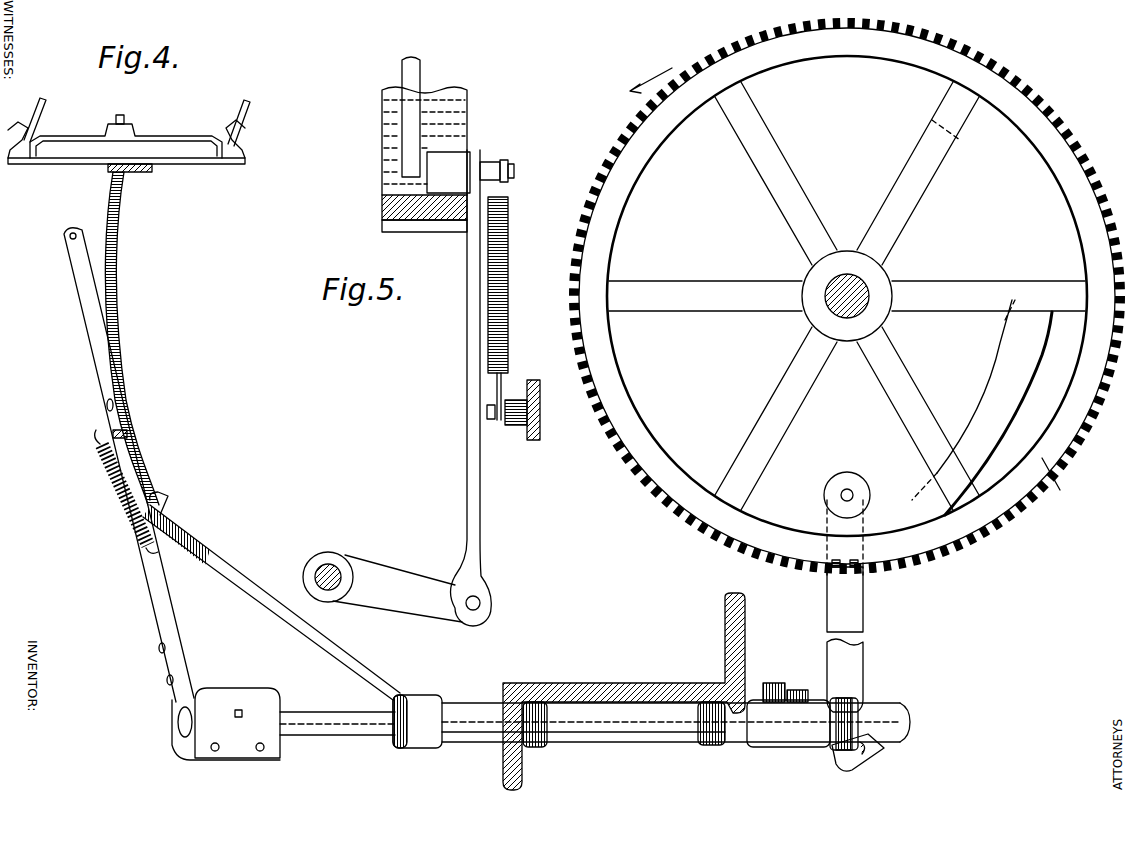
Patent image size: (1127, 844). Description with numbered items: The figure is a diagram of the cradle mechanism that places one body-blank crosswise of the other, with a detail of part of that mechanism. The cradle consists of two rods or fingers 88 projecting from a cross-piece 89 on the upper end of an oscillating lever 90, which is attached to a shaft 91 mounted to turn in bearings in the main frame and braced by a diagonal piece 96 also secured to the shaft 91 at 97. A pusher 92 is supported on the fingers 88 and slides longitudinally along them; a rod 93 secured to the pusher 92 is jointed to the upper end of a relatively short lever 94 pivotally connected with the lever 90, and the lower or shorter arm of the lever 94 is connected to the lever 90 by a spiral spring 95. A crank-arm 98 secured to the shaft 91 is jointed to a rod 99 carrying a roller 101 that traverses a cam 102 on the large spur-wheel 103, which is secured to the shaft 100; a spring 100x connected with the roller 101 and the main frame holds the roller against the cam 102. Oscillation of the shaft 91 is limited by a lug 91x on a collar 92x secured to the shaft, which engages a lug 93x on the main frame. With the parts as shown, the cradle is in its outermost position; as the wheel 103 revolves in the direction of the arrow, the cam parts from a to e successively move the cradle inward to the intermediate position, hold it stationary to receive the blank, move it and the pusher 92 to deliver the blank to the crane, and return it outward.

In FIG. 4, the rods or fingers 88 is at (240, 110).
In FIG. 4, the cross-piece 89 is at (192, 162).
In FIG. 4, the oscillating lever 90 is at (108, 258).
In FIG. 4, the shaft 91 is at (346, 727).
In FIG. 5, the shaft 91 is at (332, 577).
In FIG. 4, the pusher 92 is at (174, 142).
In FIG. 4, the rod 93 is at (104, 172).
In FIG. 4, the lever 94 is at (93, 305).
In FIG. 4, the spiral spring 95 is at (108, 468).
In FIG. 4, the diagonal piece 96 is at (278, 614).
In FIG. 4, the securing point 97 is at (416, 695).
In FIG. 5, the crank-arm 98 is at (866, 768).
In FIG. 5, the rod 99 is at (468, 326).
In FIG. 5, the shaft 100 is at (862, 286).
In FIG. 5, the spring 100x is at (506, 272).
In FIG. 5, the roller 101 is at (455, 162).
In FIG. 5, the cam 102 is at (1006, 379).
In FIG. 5, the spur-wheel 103 is at (384, 210).
In FIG. 5, the lug 91x is at (798, 690).
In FIG. 5, the collar 92x is at (820, 748).
In FIG. 5, the lug 93x is at (772, 683).